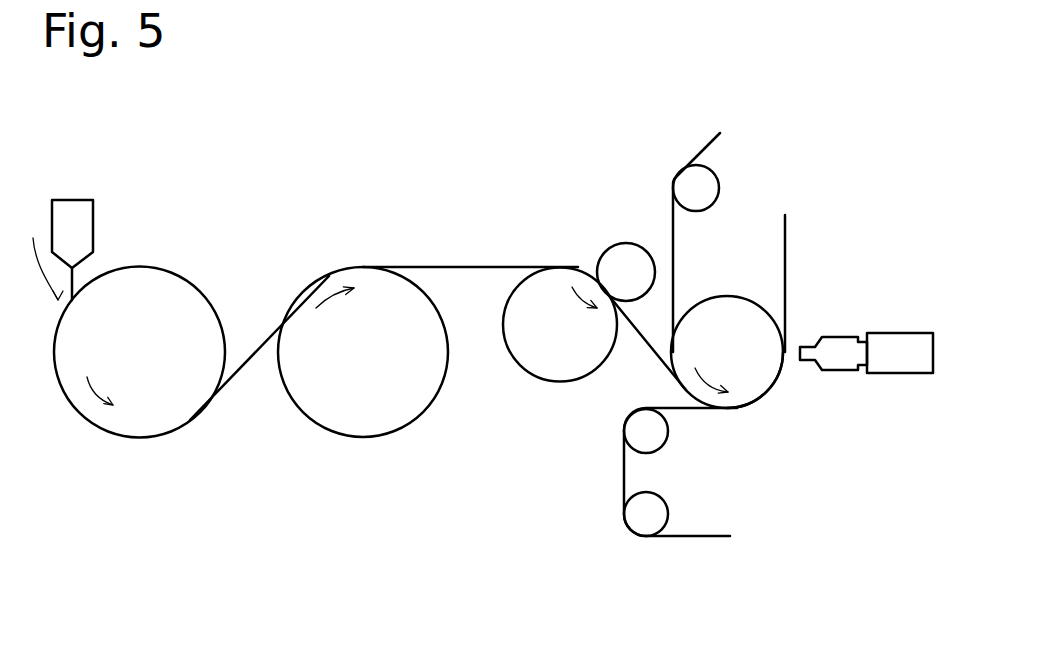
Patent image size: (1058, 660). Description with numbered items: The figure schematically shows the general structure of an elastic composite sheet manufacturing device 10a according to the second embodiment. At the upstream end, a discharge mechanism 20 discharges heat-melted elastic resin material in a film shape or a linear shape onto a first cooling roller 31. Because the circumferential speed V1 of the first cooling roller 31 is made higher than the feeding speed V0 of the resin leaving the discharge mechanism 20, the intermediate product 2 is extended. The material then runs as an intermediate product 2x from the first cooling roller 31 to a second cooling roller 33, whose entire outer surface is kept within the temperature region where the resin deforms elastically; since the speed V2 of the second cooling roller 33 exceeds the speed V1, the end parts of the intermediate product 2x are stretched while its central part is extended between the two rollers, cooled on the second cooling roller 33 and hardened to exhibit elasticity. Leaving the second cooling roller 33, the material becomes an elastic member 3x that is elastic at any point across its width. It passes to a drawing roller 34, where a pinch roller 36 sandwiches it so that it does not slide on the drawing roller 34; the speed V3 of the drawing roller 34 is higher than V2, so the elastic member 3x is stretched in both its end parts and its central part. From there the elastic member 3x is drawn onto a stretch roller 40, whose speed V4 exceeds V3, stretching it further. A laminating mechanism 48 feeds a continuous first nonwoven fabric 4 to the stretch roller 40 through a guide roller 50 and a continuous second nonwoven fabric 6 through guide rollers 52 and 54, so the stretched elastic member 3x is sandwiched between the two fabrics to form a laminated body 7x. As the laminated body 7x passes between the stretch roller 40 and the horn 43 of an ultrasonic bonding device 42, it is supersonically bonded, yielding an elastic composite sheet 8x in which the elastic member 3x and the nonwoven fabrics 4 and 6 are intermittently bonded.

The elastic composite sheet manufacturing device 10a is at (860, 108).
The discharge mechanism 20 is at (72, 200).
The intermediate product 2 is at (75, 278).
The first cooling roller 31 is at (203, 293).
The intermediate product 2x is at (247, 363).
The second cooling roller 33 is at (382, 438).
The elastic member 3x is at (455, 267).
The drawing roller 34 is at (538, 380).
The pinch roller 36 is at (623, 243).
The stretch roller 40 is at (718, 296).
The first nonwoven fabric 4 is at (703, 145).
The guide roller 50 is at (718, 183).
The elastic composite sheet 8x is at (785, 230).
The laminated body 7x is at (773, 387).
The horn 43 is at (810, 347).
The ultrasonic bonding device 42 is at (892, 308).
The laminating mechanism 48 is at (812, 463).
The guide roller 54 is at (668, 437).
The guide roller 52 is at (668, 508).
The second nonwoven fabric 6 is at (713, 535).
The feeding speed V0 is at (41, 249).
The circumferential speed of first cooling roller V1 is at (78, 397).
The circumferential speed of second cooling roller V2 is at (327, 297).
The circumferential speed of drawing roller V3 is at (585, 283).
The circumferential speed of stretch roller V4 is at (683, 386).